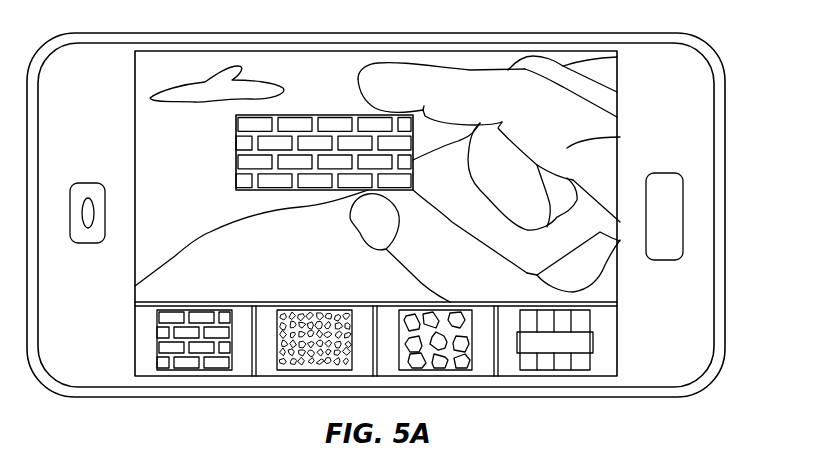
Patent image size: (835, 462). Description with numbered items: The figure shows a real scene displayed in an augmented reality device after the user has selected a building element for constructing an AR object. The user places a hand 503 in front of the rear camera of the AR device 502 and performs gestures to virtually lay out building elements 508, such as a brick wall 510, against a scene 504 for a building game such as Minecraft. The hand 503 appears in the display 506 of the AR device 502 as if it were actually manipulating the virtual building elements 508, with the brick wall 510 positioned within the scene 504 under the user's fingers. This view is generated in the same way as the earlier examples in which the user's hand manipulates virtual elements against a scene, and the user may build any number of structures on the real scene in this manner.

The AR device 502 is at (725, 161).
The hand 503 is at (565, 148).
The scene 504 is at (165, 120).
The display 506 is at (617, 73).
The building elements 508 is at (620, 353).
The brick wall 510 is at (236, 160).